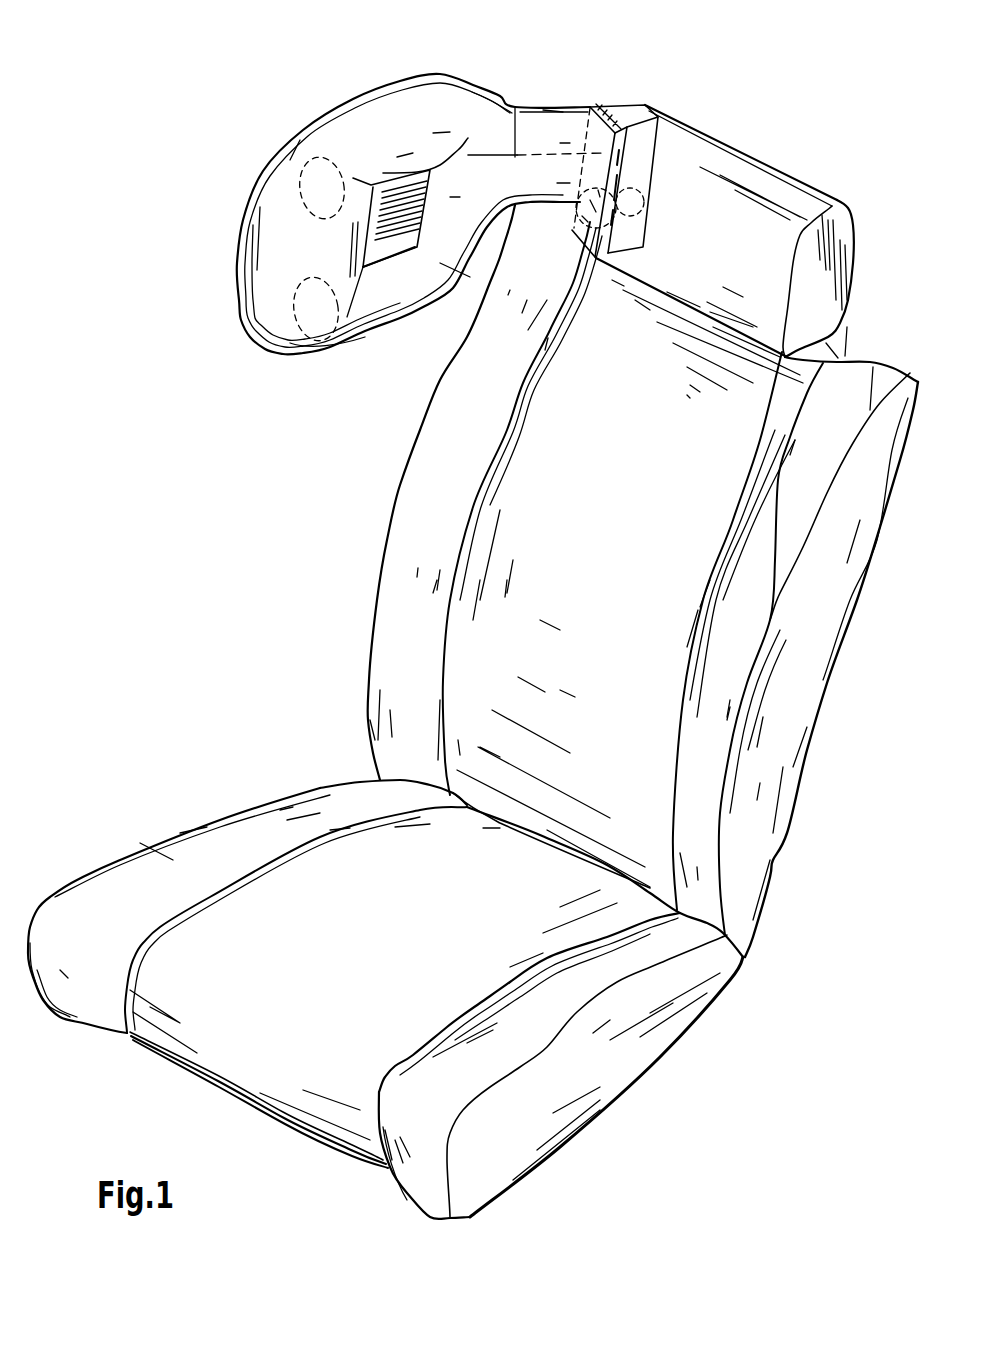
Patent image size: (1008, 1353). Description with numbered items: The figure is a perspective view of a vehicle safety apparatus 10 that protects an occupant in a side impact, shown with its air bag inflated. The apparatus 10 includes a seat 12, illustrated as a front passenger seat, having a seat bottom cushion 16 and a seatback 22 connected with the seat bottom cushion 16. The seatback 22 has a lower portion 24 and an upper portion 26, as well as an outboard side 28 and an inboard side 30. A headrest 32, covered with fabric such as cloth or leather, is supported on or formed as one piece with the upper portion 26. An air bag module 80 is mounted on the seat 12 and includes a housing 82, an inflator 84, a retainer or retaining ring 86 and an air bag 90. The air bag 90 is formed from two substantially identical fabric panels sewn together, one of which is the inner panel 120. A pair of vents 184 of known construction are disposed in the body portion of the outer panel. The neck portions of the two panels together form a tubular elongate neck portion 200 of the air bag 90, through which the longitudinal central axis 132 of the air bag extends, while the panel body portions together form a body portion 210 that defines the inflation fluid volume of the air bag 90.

The vehicle safety apparatus 10 is at (157, 488).
The seat 12 is at (293, 647).
The seat bottom cushion 16 is at (212, 817).
The seatback 22 is at (387, 540).
The lower portion 24 is at (490, 718).
The upper portion 26 is at (600, 386).
The outboard side 28 is at (400, 488).
The inboard side 30 is at (773, 723).
The headrest 32 is at (778, 168).
The air bag module 80 is at (645, 100).
The housing 82 is at (653, 182).
The inflator 84 is at (627, 213).
The retaining ring 86 is at (593, 103).
The air bag 90 is at (233, 281).
The inner panel 120 is at (352, 320).
The longitudinal central axis 132 is at (507, 103).
The vents 184 is at (303, 182).
The elongate neck portion 200 is at (562, 103).
The body portion 210 is at (243, 183).